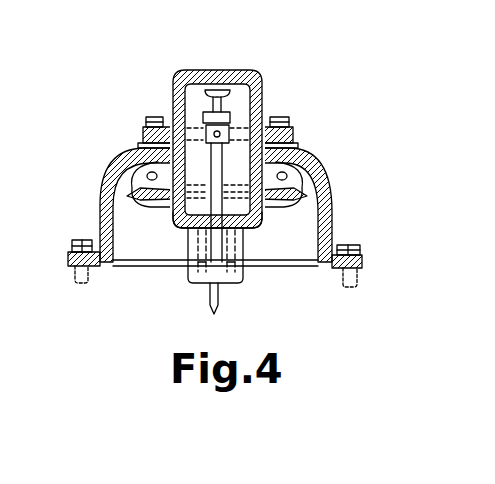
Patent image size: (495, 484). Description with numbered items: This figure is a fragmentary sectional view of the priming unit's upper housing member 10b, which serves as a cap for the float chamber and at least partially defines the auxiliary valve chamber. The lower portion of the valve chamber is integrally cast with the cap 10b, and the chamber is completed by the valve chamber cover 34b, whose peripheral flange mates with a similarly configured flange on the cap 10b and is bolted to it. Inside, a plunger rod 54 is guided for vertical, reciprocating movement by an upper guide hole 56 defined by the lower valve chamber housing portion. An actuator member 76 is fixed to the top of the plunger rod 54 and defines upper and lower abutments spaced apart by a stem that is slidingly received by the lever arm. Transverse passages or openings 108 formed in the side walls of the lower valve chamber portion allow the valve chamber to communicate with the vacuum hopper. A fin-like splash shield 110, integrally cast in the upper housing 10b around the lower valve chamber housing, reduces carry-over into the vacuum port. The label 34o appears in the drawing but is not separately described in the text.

The upper housing member 10b is at (333, 207).
The valve chamber cover 34b is at (265, 97).
The cap lower portion 34o is at (262, 218).
The actuator member 76 is at (181, 83).
The transverse passages 108 is at (308, 162).
The splash shield 110 is at (165, 207).
The plunger rod 54 is at (207, 297).
The upper guide hole 56 is at (222, 288).